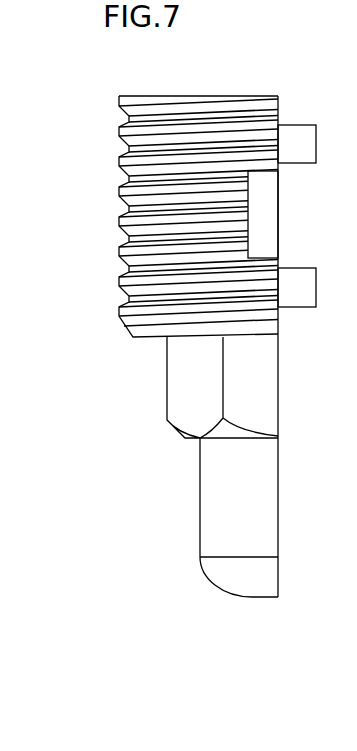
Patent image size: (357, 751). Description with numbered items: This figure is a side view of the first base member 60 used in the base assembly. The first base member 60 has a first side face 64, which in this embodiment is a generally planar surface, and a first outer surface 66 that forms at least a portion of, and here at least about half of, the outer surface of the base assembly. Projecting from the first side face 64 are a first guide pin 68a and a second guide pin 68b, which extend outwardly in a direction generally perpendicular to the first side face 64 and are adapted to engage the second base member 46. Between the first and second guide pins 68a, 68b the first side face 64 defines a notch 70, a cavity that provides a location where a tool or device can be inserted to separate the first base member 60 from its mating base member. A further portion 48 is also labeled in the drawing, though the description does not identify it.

The second base member 46 is at (72, 201).
The stem 48 is at (176, 507).
The first base member 60 is at (68, 155).
The first side face 64 is at (278, 318).
The first outer surface 66 is at (119, 318).
The first guide pin 68a is at (292, 125).
The second guide pin 68b is at (296, 268).
The notch 70 is at (265, 198).